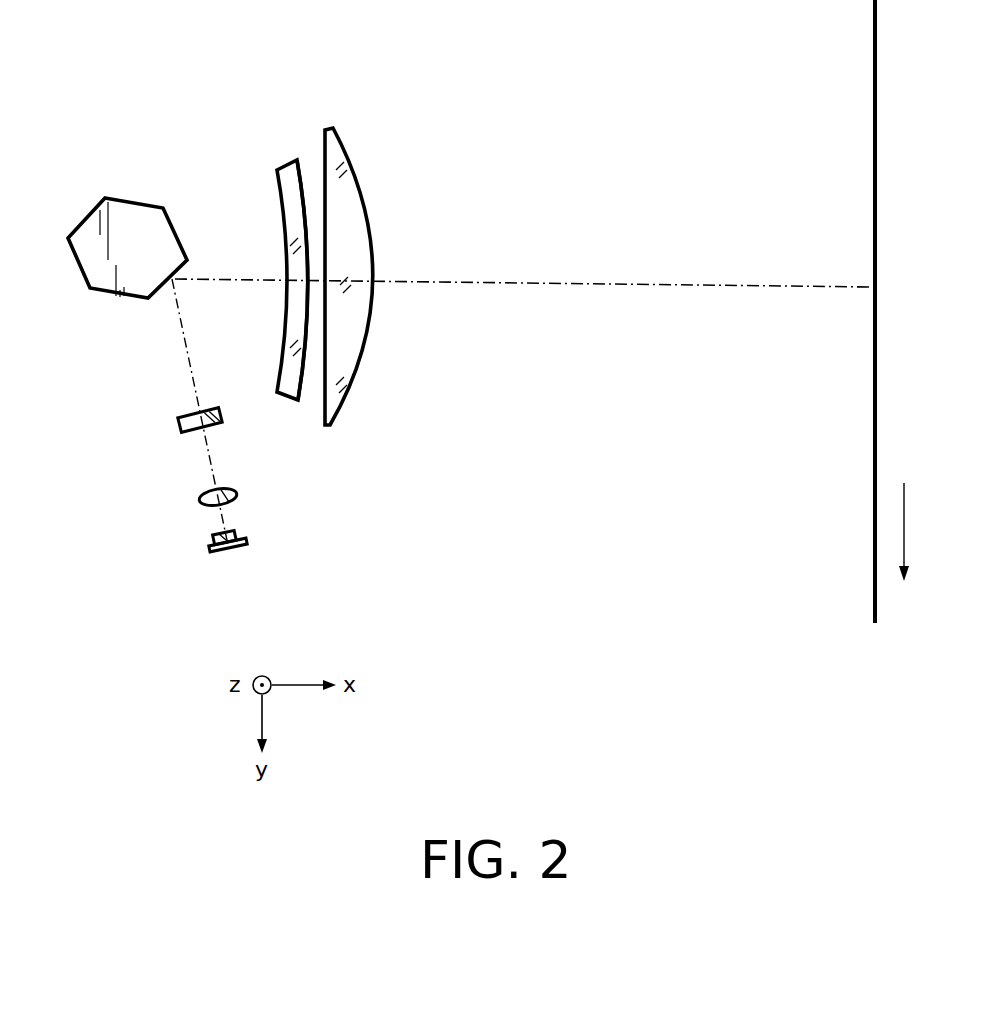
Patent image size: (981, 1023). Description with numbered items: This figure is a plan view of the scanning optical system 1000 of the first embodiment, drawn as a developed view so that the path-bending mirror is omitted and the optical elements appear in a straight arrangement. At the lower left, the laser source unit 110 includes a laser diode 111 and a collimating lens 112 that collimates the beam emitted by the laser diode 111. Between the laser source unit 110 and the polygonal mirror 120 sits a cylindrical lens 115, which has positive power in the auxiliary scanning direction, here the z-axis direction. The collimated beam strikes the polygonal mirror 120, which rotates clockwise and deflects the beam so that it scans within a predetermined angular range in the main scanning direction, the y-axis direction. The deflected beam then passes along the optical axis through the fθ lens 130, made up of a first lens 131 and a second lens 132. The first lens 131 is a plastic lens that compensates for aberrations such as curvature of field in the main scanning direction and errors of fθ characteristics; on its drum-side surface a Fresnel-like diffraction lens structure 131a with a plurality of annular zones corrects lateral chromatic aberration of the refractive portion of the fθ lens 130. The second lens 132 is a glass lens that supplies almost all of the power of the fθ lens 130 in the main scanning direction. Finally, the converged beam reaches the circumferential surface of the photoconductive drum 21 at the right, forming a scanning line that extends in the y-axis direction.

The scanning optical system 1000 is at (511, 91).
The polygonal mirror 120 is at (98, 284).
The fθ lens 130 is at (372, 67).
The first lens 131 is at (288, 158).
The diffraction lens structure 131a is at (302, 400).
The second lens 132 is at (338, 145).
The cylindrical lens 115 is at (180, 423).
The laser source unit 110 is at (108, 470).
The collimating lens 112 is at (200, 498).
The laser diode 111 is at (215, 543).
The photoconductive drum 21 is at (873, 561).